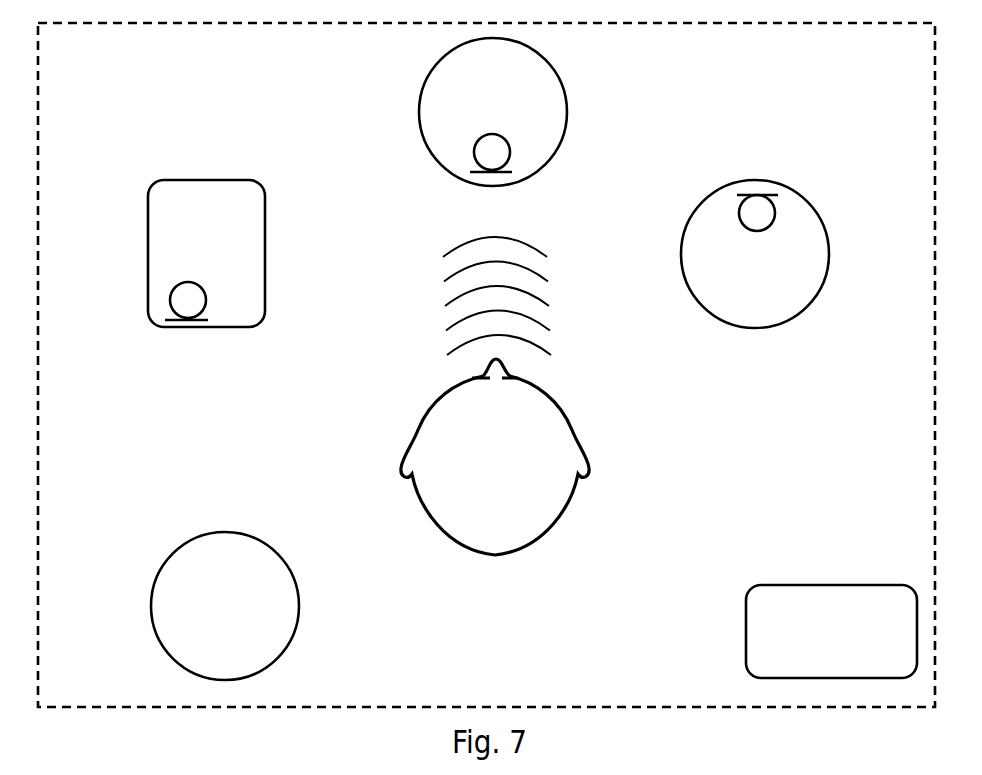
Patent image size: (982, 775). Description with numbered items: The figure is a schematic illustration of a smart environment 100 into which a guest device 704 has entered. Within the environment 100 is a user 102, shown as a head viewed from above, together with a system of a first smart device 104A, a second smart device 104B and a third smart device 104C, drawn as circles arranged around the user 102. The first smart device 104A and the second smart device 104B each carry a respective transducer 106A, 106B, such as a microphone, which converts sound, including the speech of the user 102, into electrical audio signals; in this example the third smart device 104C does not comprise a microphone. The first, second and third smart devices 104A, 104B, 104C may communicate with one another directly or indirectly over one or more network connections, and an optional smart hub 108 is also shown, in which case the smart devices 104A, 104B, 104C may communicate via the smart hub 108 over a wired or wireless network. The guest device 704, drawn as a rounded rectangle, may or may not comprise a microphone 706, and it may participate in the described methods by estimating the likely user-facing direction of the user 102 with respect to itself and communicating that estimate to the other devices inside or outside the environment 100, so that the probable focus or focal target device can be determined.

The smart environment 100 is at (921, 60).
The user 102 is at (521, 502).
The first smart device 104A is at (568, 115).
The second smart device 104B is at (822, 293).
The third smart device 104C is at (290, 645).
The transducer 106A is at (476, 165).
The transducer 106B is at (765, 195).
The smart hub 108 is at (855, 646).
The guest device 704 is at (265, 267).
The microphone 706 is at (173, 311).